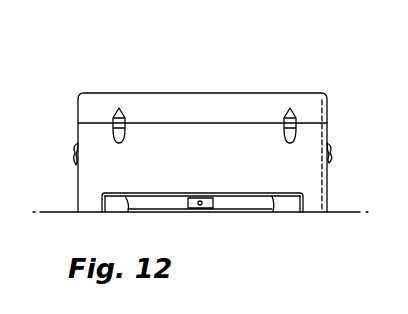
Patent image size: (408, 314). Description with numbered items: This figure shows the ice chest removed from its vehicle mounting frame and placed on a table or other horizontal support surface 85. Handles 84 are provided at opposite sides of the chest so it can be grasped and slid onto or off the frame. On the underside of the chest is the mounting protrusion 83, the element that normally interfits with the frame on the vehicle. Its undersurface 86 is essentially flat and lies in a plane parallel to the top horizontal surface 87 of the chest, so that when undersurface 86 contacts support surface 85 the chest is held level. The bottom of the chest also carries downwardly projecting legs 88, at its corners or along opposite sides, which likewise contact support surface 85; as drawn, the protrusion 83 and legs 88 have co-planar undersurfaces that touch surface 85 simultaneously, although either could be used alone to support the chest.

The mounting protrusion 83 is at (140, 200).
The handles 84 is at (333, 156).
The support surface 85 is at (351, 211).
The undersurface 86 is at (225, 212).
The top horizontal surface 87 is at (170, 93).
The legs 88 is at (77, 210).